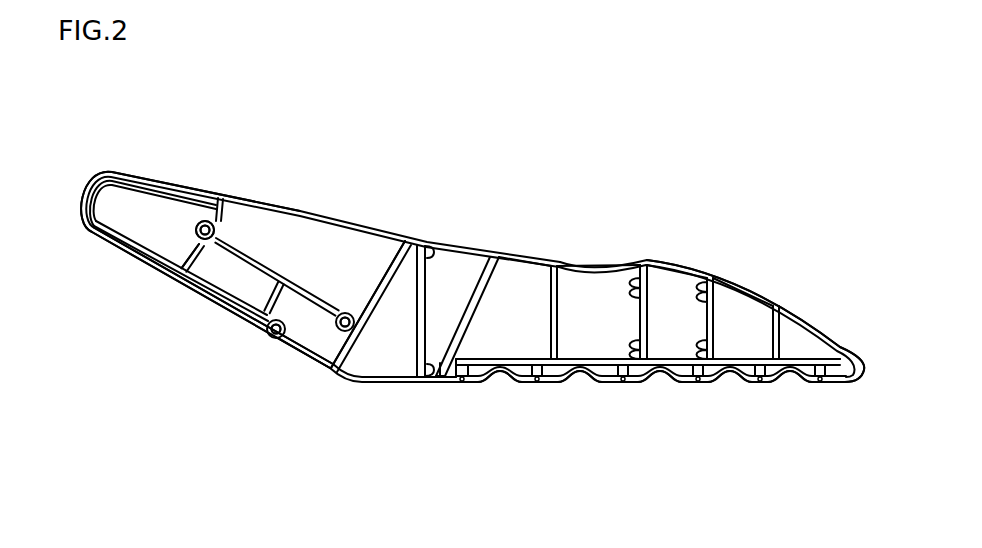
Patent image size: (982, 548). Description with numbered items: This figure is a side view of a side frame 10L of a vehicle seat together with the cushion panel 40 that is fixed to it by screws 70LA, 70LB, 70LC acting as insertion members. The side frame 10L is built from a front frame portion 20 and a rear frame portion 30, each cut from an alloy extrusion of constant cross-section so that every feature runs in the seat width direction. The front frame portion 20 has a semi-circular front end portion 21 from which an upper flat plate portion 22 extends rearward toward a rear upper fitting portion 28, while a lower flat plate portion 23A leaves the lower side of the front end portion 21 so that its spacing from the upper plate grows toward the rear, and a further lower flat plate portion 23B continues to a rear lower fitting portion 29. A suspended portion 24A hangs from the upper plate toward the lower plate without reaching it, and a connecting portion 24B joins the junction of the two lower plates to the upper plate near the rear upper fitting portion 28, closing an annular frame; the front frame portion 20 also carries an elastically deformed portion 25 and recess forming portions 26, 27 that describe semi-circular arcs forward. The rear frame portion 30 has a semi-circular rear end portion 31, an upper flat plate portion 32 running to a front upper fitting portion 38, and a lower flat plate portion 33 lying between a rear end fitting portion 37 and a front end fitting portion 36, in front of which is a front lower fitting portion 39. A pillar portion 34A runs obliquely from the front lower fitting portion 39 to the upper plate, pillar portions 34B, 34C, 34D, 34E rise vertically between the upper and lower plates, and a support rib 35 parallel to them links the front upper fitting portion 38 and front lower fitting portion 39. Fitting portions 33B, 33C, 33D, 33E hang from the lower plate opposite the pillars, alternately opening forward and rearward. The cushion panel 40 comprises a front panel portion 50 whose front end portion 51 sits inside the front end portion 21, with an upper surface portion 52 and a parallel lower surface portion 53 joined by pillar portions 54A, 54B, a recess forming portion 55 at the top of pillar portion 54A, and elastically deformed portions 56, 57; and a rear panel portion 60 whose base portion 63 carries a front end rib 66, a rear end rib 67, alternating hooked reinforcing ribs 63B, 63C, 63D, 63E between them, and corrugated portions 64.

The side frame 10L is at (607, 129).
The front frame portion 20 is at (326, 211).
The front end portion 21 is at (83, 200).
The upper flat plate portion 22 is at (163, 183).
The lower flat plate portion 23A is at (187, 198).
The lower flat plate portion 23B is at (388, 375).
The suspended portion 24A is at (232, 205).
The connecting portion 24B is at (382, 280).
The elastically deformed portion 25 is at (222, 231).
The recess forming portion 26 is at (334, 312).
The recess forming portion 27 is at (348, 305).
The rear upper fitting portion 28 is at (428, 243).
The rear lower fitting portion 29 is at (418, 373).
The rear frame portion 30 is at (590, 266).
The rear end portion 31 is at (863, 352).
The upper flat plate portion 32 is at (753, 290).
The lower flat plate portion 33 is at (650, 358).
The fitting portion 33B is at (543, 362).
The fitting portion 33C is at (615, 365).
The fitting portion 33D is at (697, 366).
The fitting portion 33E is at (759, 364).
The pillar portion 34A is at (464, 312).
The pillar portion 34B is at (558, 312).
The pillar portion 34C is at (641, 316).
The pillar portion 34D is at (714, 316).
The pillar portion 34E is at (775, 342).
The support rib 35 is at (426, 300).
The front end fitting portion 36 is at (453, 362).
The rear end fitting portion 37 is at (834, 342).
The front upper fitting portion 38 is at (428, 258).
The front lower fitting portion 39 is at (440, 377).
The cushion panel 40 is at (203, 499).
The front panel portion 50 is at (231, 312).
The front end portion 51 is at (101, 197).
The upper surface portion 52 is at (137, 200).
The lower surface portion 53 is at (152, 258).
The pillar portion 54A is at (188, 265).
The pillar portion 54B is at (262, 308).
The recess forming portion 55 is at (206, 256).
The elastically deformed portion 56 is at (226, 340).
The elastically deformed portion 57 is at (298, 351).
The rear panel portion 60 is at (650, 386).
The base portion 63 is at (607, 383).
The reinforcing rib 63B is at (537, 381).
The reinforcing rib 63C is at (623, 381).
The reinforcing rib 63D is at (698, 381).
The reinforcing rib 63E is at (760, 381).
The corrugated portion 64 is at (500, 373).
The front end rib 66 is at (463, 383).
The rear end rib 67 is at (820, 381).
The screw 70LA is at (200, 222).
The screw 70LB is at (271, 340).
The screw 70LC is at (346, 332).